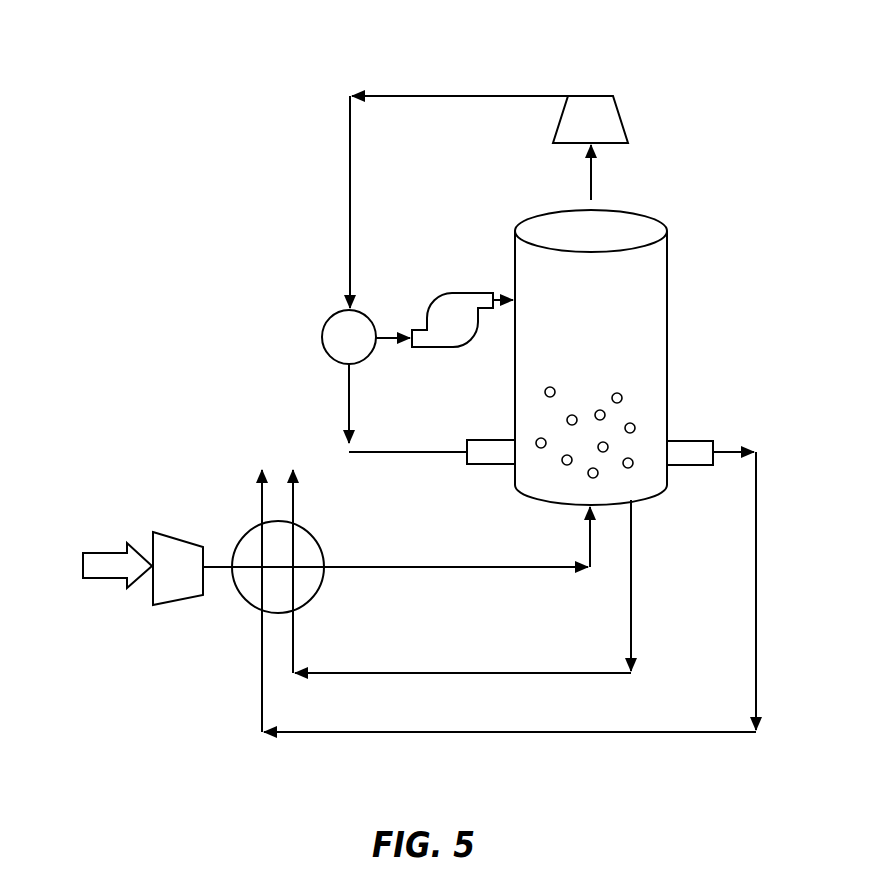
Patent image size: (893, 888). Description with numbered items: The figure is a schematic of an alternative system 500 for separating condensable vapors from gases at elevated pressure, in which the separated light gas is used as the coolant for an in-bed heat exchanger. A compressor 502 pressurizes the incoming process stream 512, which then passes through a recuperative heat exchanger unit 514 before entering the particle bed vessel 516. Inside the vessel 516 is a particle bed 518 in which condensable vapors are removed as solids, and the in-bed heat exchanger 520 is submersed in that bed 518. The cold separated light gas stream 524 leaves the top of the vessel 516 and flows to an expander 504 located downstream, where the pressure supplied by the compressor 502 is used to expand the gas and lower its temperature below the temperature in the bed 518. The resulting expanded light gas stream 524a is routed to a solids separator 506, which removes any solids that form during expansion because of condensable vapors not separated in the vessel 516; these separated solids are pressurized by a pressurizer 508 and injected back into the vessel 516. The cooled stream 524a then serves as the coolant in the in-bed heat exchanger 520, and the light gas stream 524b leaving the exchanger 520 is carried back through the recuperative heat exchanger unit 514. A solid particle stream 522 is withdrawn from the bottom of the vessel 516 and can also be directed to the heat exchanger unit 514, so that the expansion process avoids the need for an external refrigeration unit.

The system 500 is at (141, 91).
The compressor 502 is at (178, 602).
The expander 504 is at (595, 96).
The solids separator 506 is at (322, 337).
The pressurizer 508 is at (468, 292).
The process stream 512 is at (115, 561).
The recuperative heat exchanger unit 514 is at (253, 548).
The particle bed vessel 516 is at (668, 318).
The particle bed 518 is at (530, 413).
The in-bed heat exchanger 520 is at (695, 441).
The solid particle stream 522 is at (632, 612).
The light gas stream 524 is at (592, 173).
The expanded light gas stream 524a is at (349, 187).
The light gas stream 524b is at (757, 612).